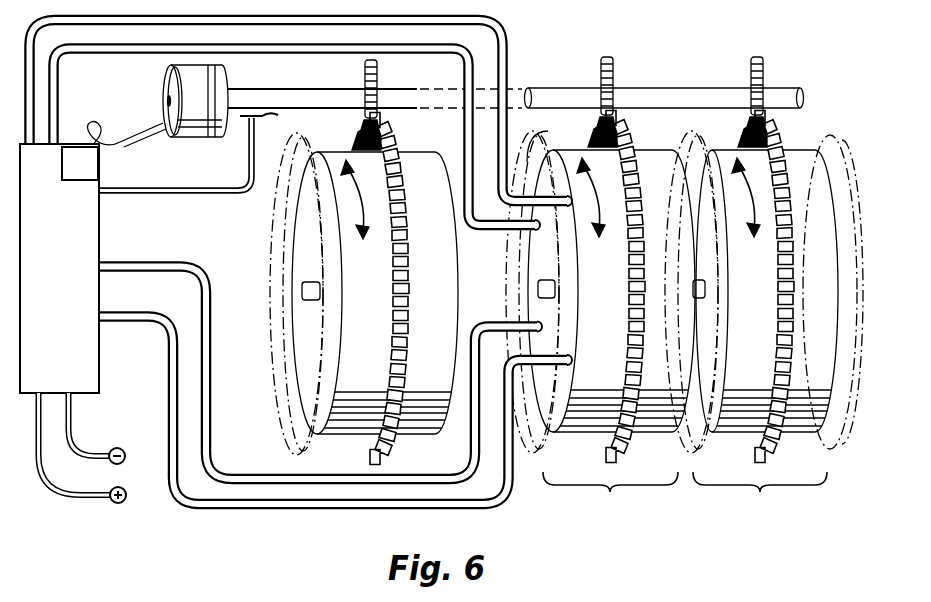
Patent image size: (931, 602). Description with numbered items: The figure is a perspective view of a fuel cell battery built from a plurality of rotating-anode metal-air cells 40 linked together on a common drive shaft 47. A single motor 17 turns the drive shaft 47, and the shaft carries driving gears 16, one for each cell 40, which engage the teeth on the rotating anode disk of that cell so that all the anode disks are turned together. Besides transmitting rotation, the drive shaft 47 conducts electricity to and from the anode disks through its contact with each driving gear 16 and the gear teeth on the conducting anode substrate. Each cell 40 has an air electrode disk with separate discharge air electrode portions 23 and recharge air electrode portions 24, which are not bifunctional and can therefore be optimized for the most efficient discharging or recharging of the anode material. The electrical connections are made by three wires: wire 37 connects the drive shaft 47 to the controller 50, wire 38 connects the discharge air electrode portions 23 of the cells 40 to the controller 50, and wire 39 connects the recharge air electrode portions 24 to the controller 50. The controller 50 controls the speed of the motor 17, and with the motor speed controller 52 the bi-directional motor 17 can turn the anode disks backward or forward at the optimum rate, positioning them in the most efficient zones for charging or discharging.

The gears 16 is at (362, 67).
The motor 17 is at (160, 100).
The discharge air electrode portion 23 is at (310, 222).
The recharge air electrode portion 24 is at (330, 218).
The wire 37 is at (138, 198).
The wire 38 is at (467, 83).
The wire 39 is at (508, 59).
The cell 40 is at (685, 498).
The drive shaft 47 is at (255, 89).
The controller 50 is at (76, 275).
The motor speed controller 52 is at (91, 173).